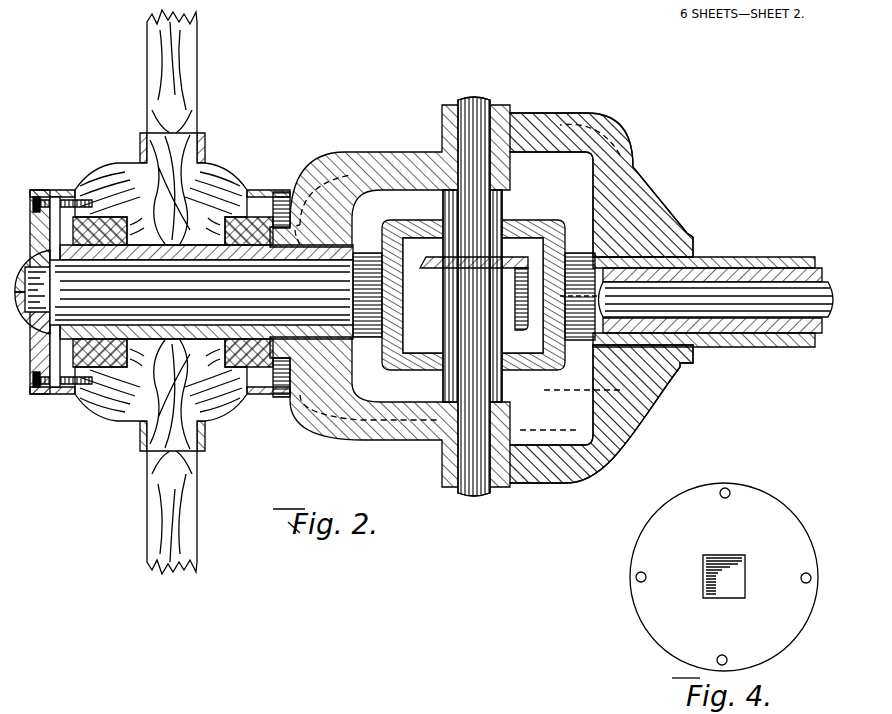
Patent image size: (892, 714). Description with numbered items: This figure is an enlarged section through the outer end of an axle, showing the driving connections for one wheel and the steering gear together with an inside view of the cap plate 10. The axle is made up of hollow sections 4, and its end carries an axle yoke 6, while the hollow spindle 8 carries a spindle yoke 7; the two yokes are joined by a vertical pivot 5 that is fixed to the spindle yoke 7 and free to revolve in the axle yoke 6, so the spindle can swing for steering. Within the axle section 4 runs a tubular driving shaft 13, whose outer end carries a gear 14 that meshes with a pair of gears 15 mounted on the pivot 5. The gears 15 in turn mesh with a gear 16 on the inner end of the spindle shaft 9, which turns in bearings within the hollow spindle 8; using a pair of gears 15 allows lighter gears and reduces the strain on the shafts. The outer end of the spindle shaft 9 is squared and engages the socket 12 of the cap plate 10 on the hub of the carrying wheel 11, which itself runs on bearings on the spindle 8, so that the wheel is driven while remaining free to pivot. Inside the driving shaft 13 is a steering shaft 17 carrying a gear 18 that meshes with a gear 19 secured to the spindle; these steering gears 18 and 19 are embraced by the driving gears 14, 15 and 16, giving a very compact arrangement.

In FIG. 2, the hollow axle section 4 is at (755, 258).
In FIG. 2, the spindle pivot 5 is at (478, 112).
In FIG. 2, the axle yoke 6 is at (637, 177).
In FIG. 2, the spindle yoke 7 is at (387, 157).
In FIG. 2, the spindle 8 is at (238, 243).
In FIG. 2, the spindle shaft 9 is at (281, 300).
In FIG. 2, the cap plate 10 is at (35, 350).
In FIG. 4, the cap plate 10 is at (790, 513).
In FIG. 2, the wheel 11 is at (120, 396).
In FIG. 4, the socket 12 is at (738, 574).
In FIG. 2, the tubular driving shaft 13 is at (822, 273).
In FIG. 2, the driving shaft gear 14 is at (568, 249).
In FIG. 2, the pivot gear 15 is at (525, 226).
In FIG. 2, the spindle shaft gear 16 is at (384, 243).
In FIG. 2, the steering shaft 17 is at (795, 298).
In FIG. 2, the steering shaft gear 18 is at (517, 327).
In FIG. 2, the spindle steering gear 19 is at (449, 269).